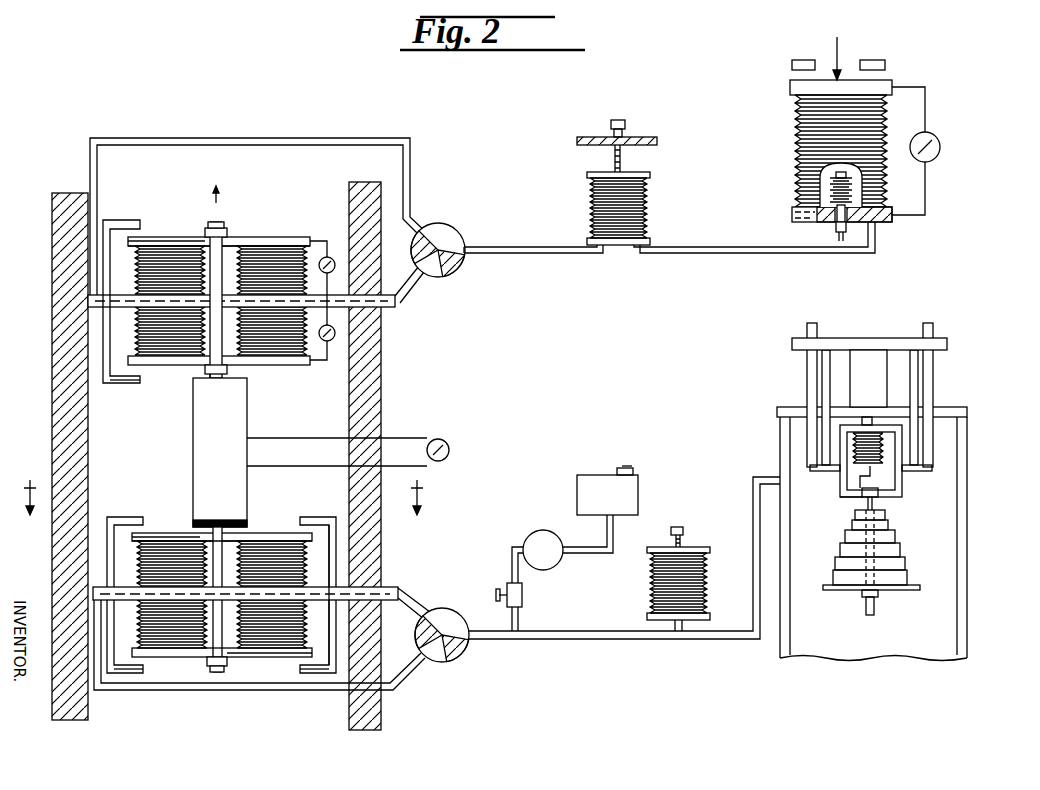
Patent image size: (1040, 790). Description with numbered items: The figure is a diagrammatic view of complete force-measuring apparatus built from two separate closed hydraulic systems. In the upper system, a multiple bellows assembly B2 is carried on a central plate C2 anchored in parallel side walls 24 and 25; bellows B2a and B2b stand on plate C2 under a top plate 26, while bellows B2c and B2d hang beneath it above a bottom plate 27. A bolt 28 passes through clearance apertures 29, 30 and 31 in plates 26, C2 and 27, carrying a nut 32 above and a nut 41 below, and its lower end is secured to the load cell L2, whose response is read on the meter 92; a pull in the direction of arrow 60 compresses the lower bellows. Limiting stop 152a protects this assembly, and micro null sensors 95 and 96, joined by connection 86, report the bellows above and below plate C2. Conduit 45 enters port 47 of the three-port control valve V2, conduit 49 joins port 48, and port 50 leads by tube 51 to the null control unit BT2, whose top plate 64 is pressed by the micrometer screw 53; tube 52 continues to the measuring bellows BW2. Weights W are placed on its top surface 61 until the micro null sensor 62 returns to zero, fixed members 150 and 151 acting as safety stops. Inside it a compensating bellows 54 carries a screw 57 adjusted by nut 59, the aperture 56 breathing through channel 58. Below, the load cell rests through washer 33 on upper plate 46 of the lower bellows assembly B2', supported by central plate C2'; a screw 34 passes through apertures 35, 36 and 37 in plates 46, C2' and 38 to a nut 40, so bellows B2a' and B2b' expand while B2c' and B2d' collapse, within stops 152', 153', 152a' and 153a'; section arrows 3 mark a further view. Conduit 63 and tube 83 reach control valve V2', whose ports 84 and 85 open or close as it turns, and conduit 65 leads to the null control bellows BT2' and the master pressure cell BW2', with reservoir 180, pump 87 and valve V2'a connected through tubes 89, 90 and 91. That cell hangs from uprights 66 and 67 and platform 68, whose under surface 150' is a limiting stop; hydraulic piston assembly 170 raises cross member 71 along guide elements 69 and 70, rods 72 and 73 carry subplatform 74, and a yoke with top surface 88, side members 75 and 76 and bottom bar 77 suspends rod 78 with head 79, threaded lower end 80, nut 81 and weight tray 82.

The side wall 24 is at (55, 437).
The side wall 25 is at (382, 388).
The top plate 26 is at (145, 237).
The bottom plate 27 is at (160, 366).
The bolt 28 is at (222, 235).
The clearance aperture 29 is at (196, 240).
The clearance aperture 30 is at (207, 301).
The clearance aperture 31 is at (185, 372).
The nut 32 is at (210, 232).
The washer 33 is at (200, 526).
The screw 34 is at (221, 673).
The clearance aperture 35 is at (200, 530).
The clearance aperture 36 is at (212, 596).
The clearance aperture 37 is at (206, 668).
The plate 38 is at (130, 657).
The nut 40 is at (247, 658).
The nut 41 is at (238, 375).
The conduit 45 is at (415, 143).
The upper plate 46 is at (146, 533).
The port 47 is at (420, 232).
The port 48 is at (421, 272).
The conduit 49 is at (405, 304).
The port 50 is at (467, 262).
The tube 51 is at (541, 256).
The tube 52 is at (105, 222).
The micrometer adjusting screw 53 is at (624, 134).
The compensating bellows 54 is at (830, 186).
The aperture 56 is at (830, 222).
The screw 57 is at (846, 234).
The channel 58 is at (790, 212).
The adjusting nut 59 is at (838, 234).
The arrow 60 is at (216, 201).
The top surface 61 is at (790, 90).
The micro null sensor 62 is at (940, 151).
The conduit 63 is at (416, 690).
The top plate 64 is at (640, 178).
The conduit 65 is at (608, 640).
The upright 66 is at (784, 656).
The upright 67 is at (960, 562).
The cross member 68 is at (955, 408).
The guide element 69 is at (807, 384).
The guide element 70 is at (935, 370).
The cross member 71 is at (947, 343).
The rod 72 is at (810, 450).
The rod 73 is at (918, 429).
The subplatform 74 is at (932, 468).
The side member 75 is at (840, 494).
The side member 76 is at (880, 502).
The bottom bar 77 is at (846, 506).
The rod 78 is at (885, 513).
The head 79 is at (880, 490).
The lower end 80 is at (875, 615).
The nut 81 is at (858, 600).
The weight receiving tray 82 is at (920, 588).
The tube 83 is at (419, 600).
The port 84 is at (418, 617).
The port 85 is at (426, 663).
The gauge line 86 is at (304, 239).
The hydraulic pump 87 is at (543, 550).
The top surface 88 is at (866, 417).
The tube 89 is at (612, 531).
The tube 90 is at (519, 580).
The tube 91 is at (514, 641).
The meter 92 is at (449, 449).
The micro null sensor 95 is at (335, 265).
The micro null sensor 96 is at (335, 333).
The safety stop 150 is at (799, 49).
The safety stop 151 is at (880, 60).
The under surface 150' is at (814, 454).
The limiting stop 152a is at (71, 394).
The limiting stop 152' is at (123, 577).
The limiting stop 152a' is at (110, 709).
The limiting stop 153' is at (323, 579).
The limiting stop 153a' is at (324, 709).
The hydraulic piston assembly 170 is at (868, 350).
The hydraulic fluid reservoir 180 is at (588, 475).
The section line 3 is at (223, 509).
The multiple bellows assembly B2 is at (220, 225).
The bellows B2a is at (102, 270).
The bellows B2b is at (270, 249).
The bellows B2c is at (102, 336).
The bellows B2d is at (275, 353).
The bellows assembly B2' is at (222, 513).
The bellows B2a' is at (103, 565).
The bellows B2b' is at (337, 565).
The bellows B2c' is at (172, 659).
The bellows B2d' is at (272, 659).
The null control unit BT2 is at (589, 211).
The null control bellows BT2' is at (652, 579).
The measuring bellows BW2 is at (813, 151).
The master pressure cell BW2' is at (939, 448).
The central plate C2 is at (72, 301).
The central plate C2' is at (378, 595).
The load cell L2 is at (220, 452).
The three port control valve V2 is at (450, 242).
The control valve V2' is at (444, 622).
The valve V2'a is at (541, 583).
The weight force W is at (838, 47).